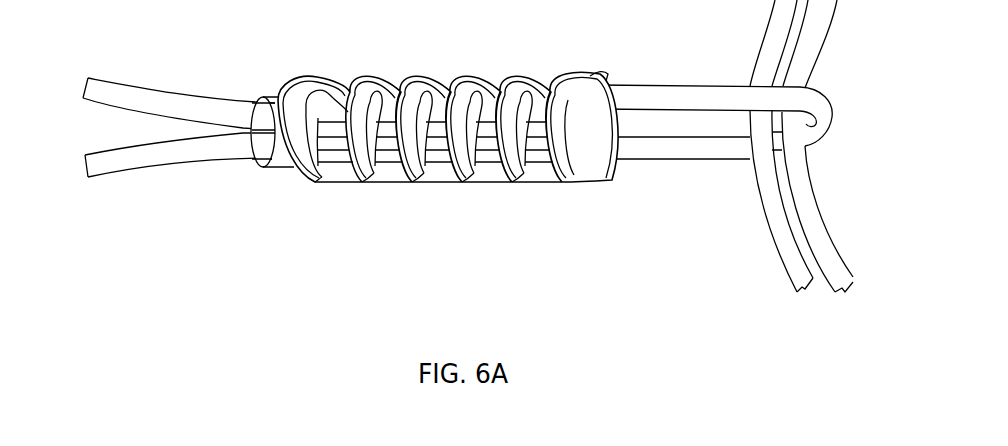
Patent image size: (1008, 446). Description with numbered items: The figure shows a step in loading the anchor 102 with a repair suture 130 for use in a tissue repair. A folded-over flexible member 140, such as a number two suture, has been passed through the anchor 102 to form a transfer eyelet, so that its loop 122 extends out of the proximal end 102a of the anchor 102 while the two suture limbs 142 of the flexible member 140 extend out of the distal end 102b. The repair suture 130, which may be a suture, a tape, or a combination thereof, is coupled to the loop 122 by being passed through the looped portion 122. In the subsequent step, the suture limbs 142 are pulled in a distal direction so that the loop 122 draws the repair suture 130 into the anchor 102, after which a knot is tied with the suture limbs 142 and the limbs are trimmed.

The anchor 102 is at (449, 159).
The proximal end 102a is at (605, 184).
The distal end 102b is at (287, 168).
The loop 122 is at (822, 110).
The repair suture 130 is at (808, 204).
The folded-over flexible member 140 is at (228, 153).
The suture limbs 142 is at (111, 95).